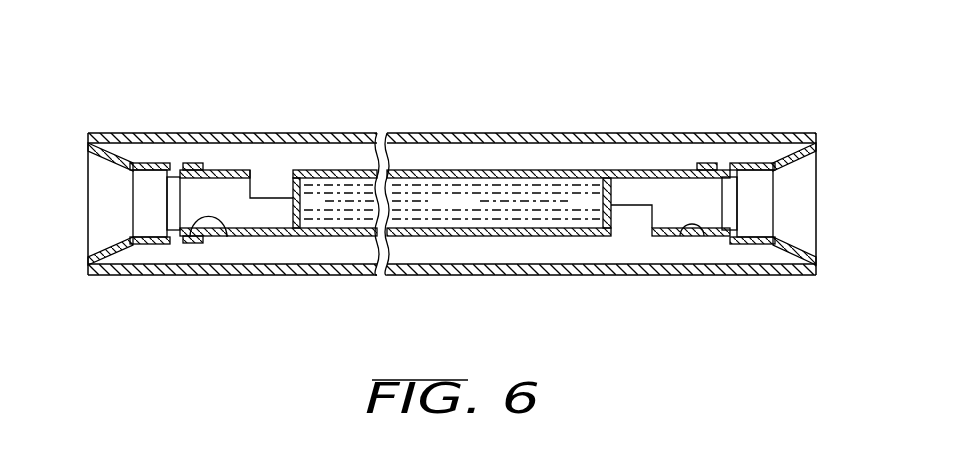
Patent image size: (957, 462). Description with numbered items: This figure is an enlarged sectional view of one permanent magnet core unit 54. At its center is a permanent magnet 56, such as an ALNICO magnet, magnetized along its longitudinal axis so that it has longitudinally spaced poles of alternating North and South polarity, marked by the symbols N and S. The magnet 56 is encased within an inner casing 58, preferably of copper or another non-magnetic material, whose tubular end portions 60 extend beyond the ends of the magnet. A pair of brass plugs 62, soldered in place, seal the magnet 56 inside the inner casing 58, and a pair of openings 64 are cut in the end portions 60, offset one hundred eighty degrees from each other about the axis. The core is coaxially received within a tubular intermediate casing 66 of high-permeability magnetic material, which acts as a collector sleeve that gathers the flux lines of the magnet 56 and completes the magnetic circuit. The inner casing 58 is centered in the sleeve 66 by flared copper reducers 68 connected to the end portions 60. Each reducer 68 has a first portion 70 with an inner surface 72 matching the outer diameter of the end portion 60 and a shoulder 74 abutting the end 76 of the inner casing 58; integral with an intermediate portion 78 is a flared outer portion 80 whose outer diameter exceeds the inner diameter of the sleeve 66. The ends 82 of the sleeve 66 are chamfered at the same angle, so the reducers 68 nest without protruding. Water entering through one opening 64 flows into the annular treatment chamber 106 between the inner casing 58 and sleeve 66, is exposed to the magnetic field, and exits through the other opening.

The permanent magnet core unit 54 is at (261, 116).
The permanent magnet 56 is at (520, 197).
The inner casing 58 is at (587, 172).
The tubular end portion 60 is at (228, 170).
The brass plug 62 is at (300, 213).
The opening 64 is at (270, 178).
The intermediate casing 66 is at (443, 133).
The flared copper reducer 68 is at (143, 160).
The first portion 70 is at (197, 243).
The inner surface 72 is at (227, 237).
The shoulder 74 is at (192, 237).
The end 76 is at (181, 163).
The intermediate portion 78 is at (116, 247).
The flared outer portion 80 is at (110, 158).
The end 82 is at (88, 147).
The annular treatment chamber 106 is at (350, 163).